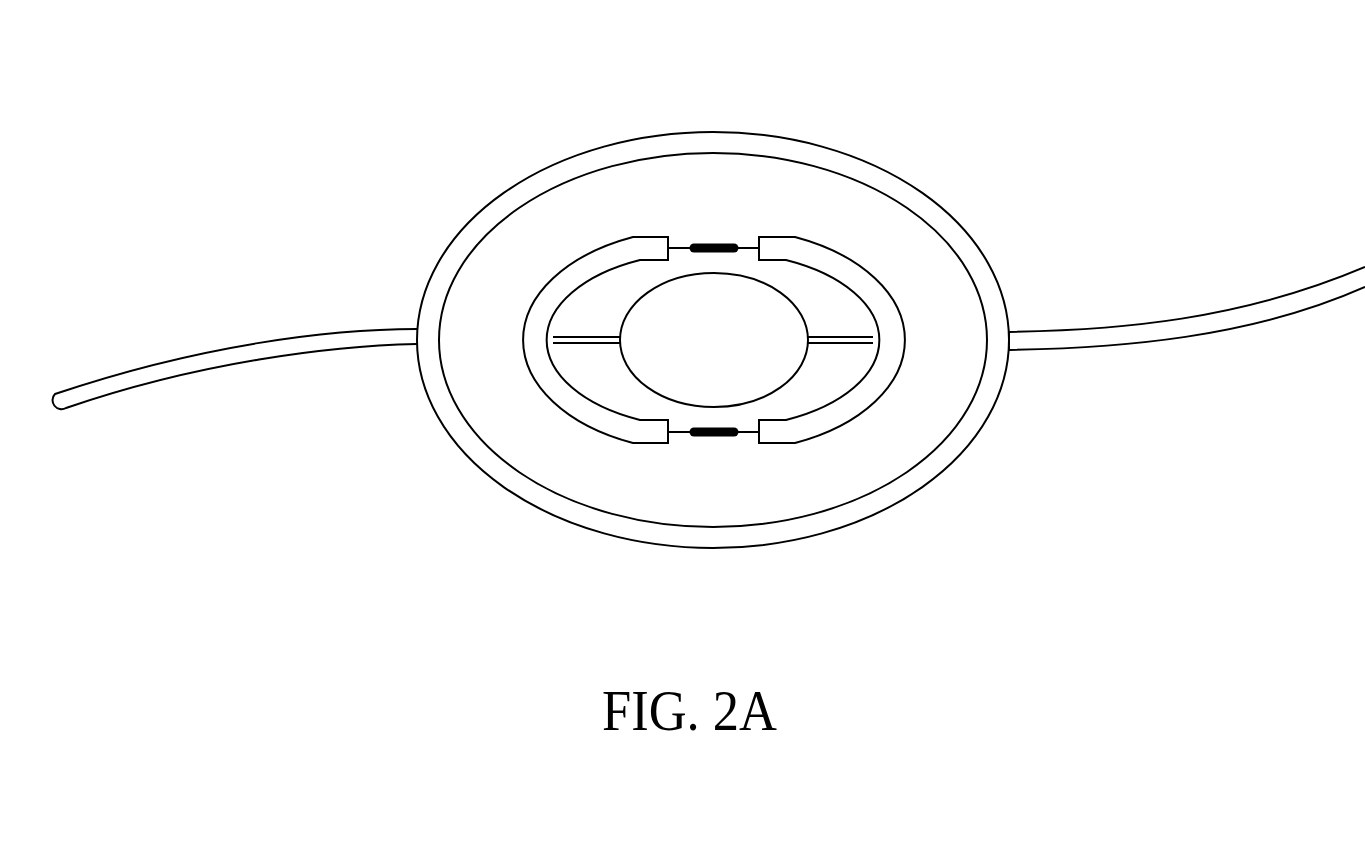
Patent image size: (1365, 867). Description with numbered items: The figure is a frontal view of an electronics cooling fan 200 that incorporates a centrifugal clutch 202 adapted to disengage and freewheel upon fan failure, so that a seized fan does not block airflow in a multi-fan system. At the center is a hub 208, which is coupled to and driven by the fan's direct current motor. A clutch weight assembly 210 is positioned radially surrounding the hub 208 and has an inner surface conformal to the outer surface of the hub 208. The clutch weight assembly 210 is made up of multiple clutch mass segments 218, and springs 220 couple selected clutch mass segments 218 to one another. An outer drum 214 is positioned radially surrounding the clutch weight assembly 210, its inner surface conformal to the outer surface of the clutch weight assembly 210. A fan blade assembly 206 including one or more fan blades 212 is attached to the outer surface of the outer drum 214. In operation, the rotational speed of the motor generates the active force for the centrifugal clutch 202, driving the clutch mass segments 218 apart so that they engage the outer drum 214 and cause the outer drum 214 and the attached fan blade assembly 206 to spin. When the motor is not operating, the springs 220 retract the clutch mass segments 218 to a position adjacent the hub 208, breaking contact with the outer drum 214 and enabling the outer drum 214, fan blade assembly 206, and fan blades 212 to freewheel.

The electronics cooling fan 200 is at (1172, 98).
The centrifugal clutch 202 is at (713, 348).
The fan blade assembly 206 is at (1018, 354).
The hub 208 is at (638, 328).
The clutch weight assembly 210 is at (723, 342).
The fan blades 212 is at (222, 343).
The outer drum 214 is at (907, 195).
The clutch mass segments 218 is at (866, 289).
The springs 220 is at (712, 247).